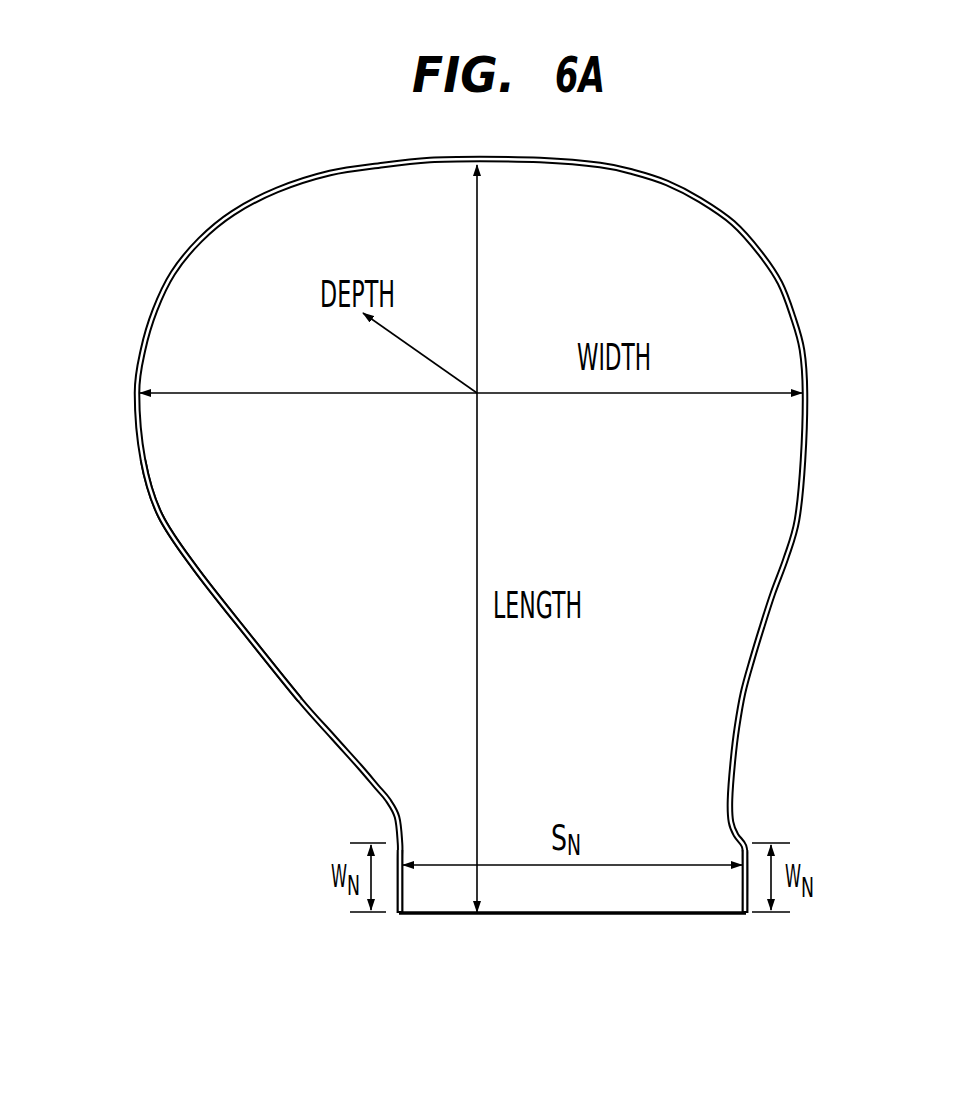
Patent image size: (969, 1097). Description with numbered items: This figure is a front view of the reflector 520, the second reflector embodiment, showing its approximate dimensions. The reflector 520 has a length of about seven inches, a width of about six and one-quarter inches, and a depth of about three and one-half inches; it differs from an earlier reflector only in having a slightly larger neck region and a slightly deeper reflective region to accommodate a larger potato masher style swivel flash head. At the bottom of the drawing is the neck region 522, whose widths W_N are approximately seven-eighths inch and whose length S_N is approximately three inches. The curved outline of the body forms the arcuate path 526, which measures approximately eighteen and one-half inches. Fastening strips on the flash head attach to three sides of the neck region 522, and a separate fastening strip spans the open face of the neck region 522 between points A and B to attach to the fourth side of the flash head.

The reflector 520 is at (465, 581).
The neck region 522 is at (412, 898).
The arcuate path 526 is at (197, 569).
The point A is at (400, 843).
The point B is at (748, 843).